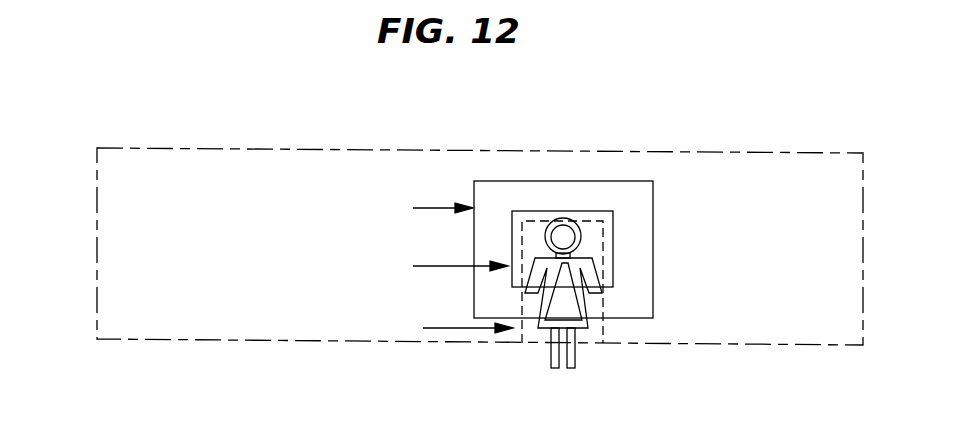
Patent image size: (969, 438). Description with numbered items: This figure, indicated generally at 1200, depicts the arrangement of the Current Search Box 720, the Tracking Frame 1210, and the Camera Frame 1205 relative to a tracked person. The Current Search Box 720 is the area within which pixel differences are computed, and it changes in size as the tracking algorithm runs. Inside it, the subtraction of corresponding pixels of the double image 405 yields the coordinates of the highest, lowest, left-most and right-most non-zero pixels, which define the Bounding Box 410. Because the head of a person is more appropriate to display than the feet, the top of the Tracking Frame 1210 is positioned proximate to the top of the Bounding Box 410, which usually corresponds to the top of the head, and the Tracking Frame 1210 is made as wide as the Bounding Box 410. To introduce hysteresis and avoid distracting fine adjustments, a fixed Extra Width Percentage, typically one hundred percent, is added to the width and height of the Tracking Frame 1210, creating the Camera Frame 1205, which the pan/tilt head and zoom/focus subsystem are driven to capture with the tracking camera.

The camera frame display of tracking system 1200 is at (122, 84).
The Current Search Box 720 is at (783, 153).
The Camera Frame 1205 is at (653, 187).
The Tracking Frame 1210 is at (613, 235).
The double image 405 is at (595, 271).
The Bounding Box 410 is at (603, 331).